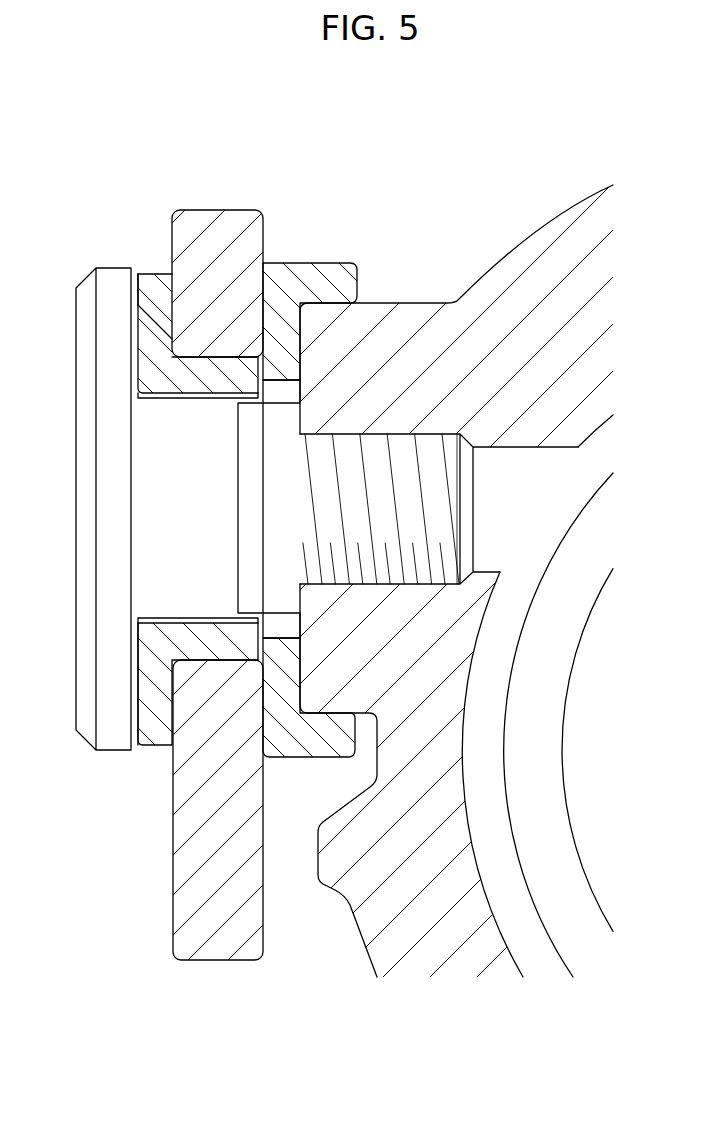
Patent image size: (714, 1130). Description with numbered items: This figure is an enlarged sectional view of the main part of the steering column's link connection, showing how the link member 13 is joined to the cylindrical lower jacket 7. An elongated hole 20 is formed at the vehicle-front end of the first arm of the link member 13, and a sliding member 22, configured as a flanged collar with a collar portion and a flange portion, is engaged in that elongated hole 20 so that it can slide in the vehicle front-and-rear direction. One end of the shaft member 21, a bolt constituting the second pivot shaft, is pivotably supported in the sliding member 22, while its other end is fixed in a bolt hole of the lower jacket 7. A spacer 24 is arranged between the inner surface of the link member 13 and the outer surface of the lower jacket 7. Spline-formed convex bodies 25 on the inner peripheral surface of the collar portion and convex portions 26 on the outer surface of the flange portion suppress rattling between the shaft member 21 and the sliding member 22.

The lower jacket 7 is at (550, 235).
The link member 13 is at (176, 836).
The elongated hole 20 is at (222, 640).
The shaft member 21 is at (137, 516).
The sliding member 22 is at (208, 382).
The spacer 24 is at (318, 266).
The convex bodies 25 is at (163, 399).
The convex portions 26 is at (137, 297).